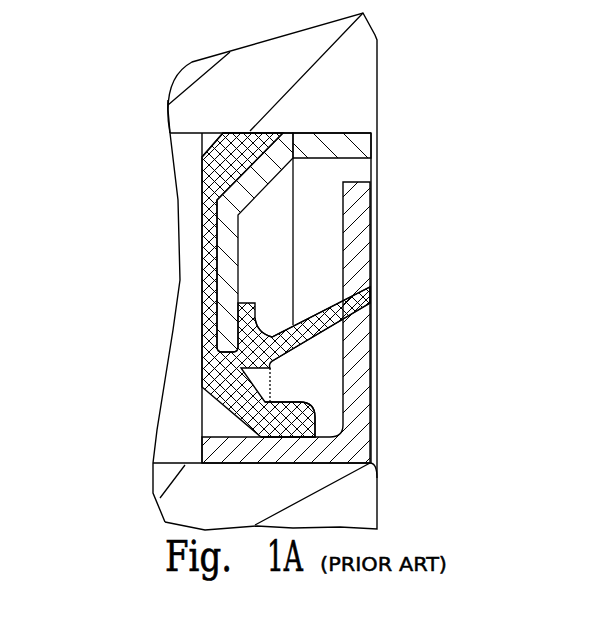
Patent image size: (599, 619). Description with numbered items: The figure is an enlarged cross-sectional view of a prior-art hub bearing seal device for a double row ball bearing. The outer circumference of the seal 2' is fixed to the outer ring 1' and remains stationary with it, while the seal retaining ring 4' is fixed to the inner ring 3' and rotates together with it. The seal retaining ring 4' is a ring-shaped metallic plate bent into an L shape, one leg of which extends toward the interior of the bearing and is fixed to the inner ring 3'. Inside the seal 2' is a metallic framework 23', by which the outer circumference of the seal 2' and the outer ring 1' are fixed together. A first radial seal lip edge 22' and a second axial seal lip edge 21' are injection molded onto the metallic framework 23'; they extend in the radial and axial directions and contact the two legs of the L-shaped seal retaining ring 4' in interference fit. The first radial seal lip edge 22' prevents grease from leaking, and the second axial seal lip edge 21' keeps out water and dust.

The outer ring 1' is at (328, 66).
The seal 2' is at (223, 268).
The inner ring 3' is at (328, 331).
The seal retaining ring 4' is at (350, 298).
The second axial seal lip edge 21' is at (218, 261).
The first radial seal lip edge 22' is at (385, 369).
The metallic framework 23' is at (176, 96).